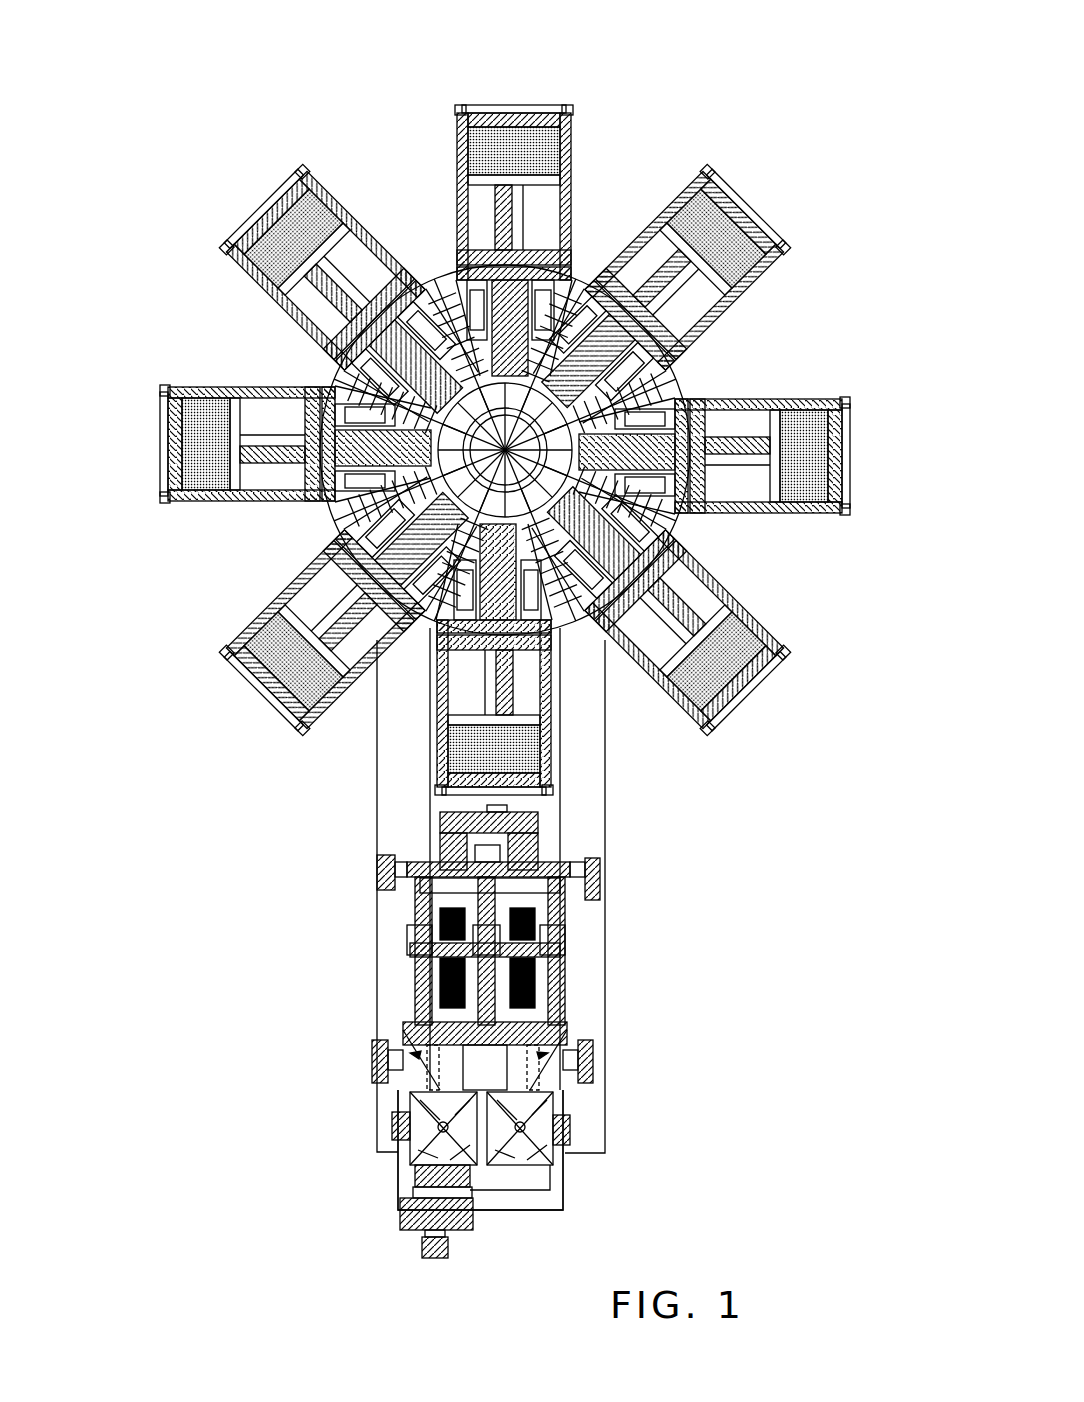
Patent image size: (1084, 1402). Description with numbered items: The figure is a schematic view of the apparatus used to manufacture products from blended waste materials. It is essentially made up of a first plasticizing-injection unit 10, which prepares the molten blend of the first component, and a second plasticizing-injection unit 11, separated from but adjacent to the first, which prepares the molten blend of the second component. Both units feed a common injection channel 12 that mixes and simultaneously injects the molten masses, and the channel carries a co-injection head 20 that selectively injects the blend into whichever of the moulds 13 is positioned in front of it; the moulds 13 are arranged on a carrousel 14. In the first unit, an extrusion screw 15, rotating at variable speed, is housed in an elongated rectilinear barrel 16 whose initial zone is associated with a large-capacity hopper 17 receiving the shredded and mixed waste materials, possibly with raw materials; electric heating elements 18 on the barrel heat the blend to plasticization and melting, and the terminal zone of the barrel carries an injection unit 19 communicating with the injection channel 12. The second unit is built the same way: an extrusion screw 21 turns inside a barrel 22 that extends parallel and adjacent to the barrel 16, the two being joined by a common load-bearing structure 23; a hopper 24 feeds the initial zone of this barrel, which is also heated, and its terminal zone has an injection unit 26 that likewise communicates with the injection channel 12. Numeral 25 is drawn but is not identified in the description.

The first plasticizing-injection unit 10 is at (440, 1068).
The second plasticizing-injection unit 11 is at (567, 1072).
The injection channel 12 is at (432, 818).
The moulds 13 is at (502, 113).
The carrousel 14 is at (590, 250).
The extrusion screw 15 is at (400, 1040).
The barrel 16 is at (420, 913).
The hopper 17 is at (430, 1140).
The electric heating elements 18 is at (413, 974).
The injection unit 19 is at (410, 856).
The co-injection head 20 is at (560, 806).
The extrusion screw 21 is at (583, 1035).
The barrel 22 is at (545, 915).
The load-bearing structure 23 is at (575, 1193).
The hopper 24 is at (595, 1150).
The right guide column 25 is at (557, 978).
The injection unit 26 is at (605, 860).